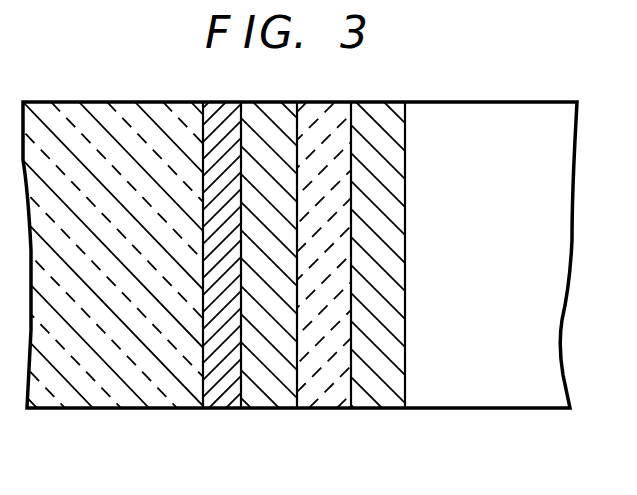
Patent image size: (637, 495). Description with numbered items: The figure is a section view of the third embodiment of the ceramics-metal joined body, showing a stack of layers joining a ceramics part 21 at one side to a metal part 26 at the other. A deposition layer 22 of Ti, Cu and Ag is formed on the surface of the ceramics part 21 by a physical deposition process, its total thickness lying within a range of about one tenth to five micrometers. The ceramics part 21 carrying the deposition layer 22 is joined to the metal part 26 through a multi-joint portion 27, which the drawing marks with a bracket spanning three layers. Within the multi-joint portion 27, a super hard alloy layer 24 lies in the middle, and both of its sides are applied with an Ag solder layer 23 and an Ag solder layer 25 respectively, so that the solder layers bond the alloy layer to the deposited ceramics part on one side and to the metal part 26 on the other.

The ceramics part 21 is at (133, 398).
The deposition layer 22 is at (216, 398).
The Ag solder layer 23 is at (271, 398).
The super hard alloy layer 24 is at (323, 398).
The Ag solder layer 25 is at (375, 397).
The metal part 26 is at (474, 395).
The multi-joint portion 27 is at (318, 259).